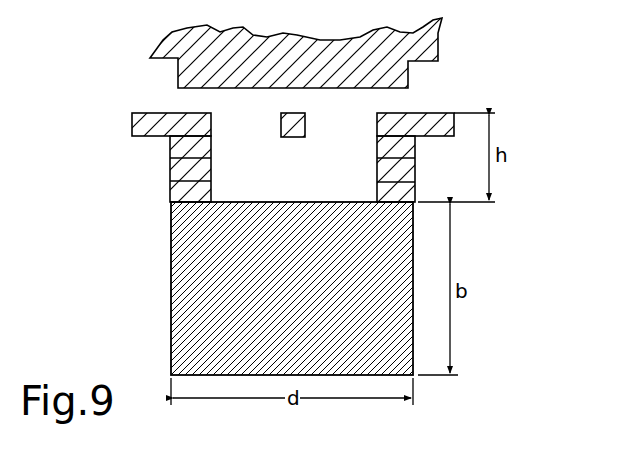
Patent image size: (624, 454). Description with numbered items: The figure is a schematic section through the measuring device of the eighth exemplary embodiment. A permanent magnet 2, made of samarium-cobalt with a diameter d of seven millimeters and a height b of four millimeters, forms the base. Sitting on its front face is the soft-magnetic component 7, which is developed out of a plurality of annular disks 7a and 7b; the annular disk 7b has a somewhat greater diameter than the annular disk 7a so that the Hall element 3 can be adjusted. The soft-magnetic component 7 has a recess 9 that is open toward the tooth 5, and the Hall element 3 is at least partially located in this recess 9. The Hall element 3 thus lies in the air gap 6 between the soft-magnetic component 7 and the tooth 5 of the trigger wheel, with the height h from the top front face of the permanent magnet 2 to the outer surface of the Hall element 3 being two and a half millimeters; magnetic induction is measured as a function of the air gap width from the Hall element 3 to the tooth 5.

The permanent magnet 2 is at (182, 333).
The Hall element 3 is at (305, 117).
The tooth 5 is at (408, 75).
The air gap 6 is at (263, 114).
The soft-magnetic component 7 is at (147, 162).
The annular disk 7a is at (180, 192).
The annular disk 7b is at (140, 125).
The recess 9 is at (225, 201).